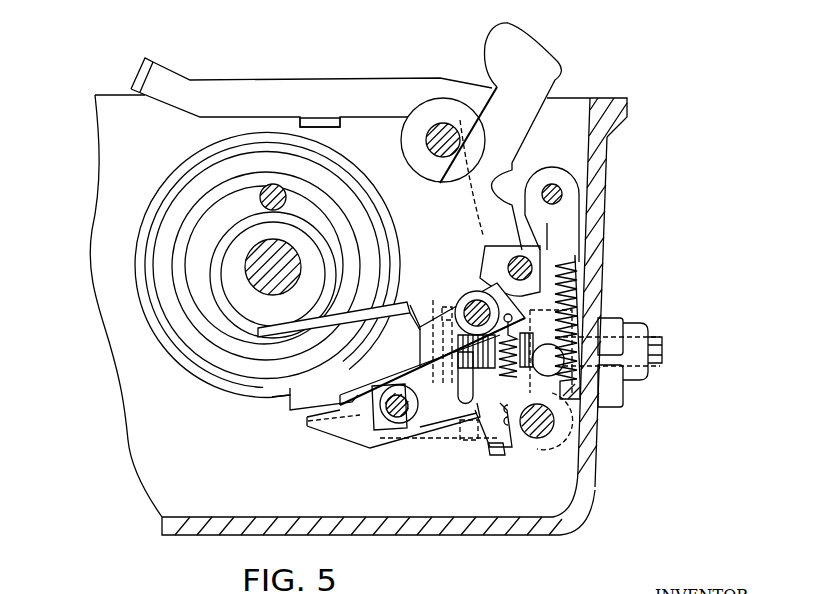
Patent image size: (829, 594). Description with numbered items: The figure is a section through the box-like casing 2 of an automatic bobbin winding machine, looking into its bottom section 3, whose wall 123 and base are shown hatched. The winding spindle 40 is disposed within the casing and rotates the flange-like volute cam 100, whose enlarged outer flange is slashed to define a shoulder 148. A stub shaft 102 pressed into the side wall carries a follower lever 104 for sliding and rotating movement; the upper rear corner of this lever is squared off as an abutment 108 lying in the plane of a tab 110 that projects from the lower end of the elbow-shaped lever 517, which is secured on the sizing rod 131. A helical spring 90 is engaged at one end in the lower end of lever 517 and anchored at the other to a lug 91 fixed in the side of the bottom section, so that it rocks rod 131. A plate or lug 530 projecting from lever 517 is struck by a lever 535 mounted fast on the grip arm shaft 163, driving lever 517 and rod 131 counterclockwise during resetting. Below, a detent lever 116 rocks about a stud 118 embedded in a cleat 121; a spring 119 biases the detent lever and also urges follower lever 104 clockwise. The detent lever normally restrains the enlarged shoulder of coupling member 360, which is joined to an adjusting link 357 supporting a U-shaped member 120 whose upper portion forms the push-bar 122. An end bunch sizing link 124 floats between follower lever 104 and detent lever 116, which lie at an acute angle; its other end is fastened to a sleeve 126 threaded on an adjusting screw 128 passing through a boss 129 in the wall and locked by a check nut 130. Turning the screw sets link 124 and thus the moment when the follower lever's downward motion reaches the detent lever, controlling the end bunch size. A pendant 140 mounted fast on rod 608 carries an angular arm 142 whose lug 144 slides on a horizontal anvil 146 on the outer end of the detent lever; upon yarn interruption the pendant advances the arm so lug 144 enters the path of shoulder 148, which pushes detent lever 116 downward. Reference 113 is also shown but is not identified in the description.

The casing 2 is at (628, 100).
The bottom section 3 is at (513, 532).
The winding spindle 40 is at (253, 273).
The helical spring 90 is at (575, 290).
The lug 91 is at (588, 430).
The volute cam 100 is at (143, 250).
The stub shaft 102 is at (462, 300).
The follower lever 104 is at (358, 320).
The abutment 108 is at (470, 292).
The tab 110 is at (476, 283).
The pawl 113 is at (490, 432).
The detent lever 116 is at (467, 405).
The stud 118 is at (530, 380).
The spring 119 is at (512, 427).
The U-shaped member 120 is at (435, 438).
The cleat 121 is at (562, 440).
The push-bar 122 is at (441, 326).
The wall 123 is at (597, 237).
The end bunch sizing link 124 is at (455, 340).
The sleeve 126 is at (470, 440).
The adjusting screw 128 is at (660, 367).
The boss 129 is at (623, 390).
The check nut 130 is at (637, 380).
The sizing rod 131 is at (510, 262).
The pendant 140 is at (575, 177).
The angular arm 142 is at (356, 397).
The lug 144 is at (345, 405).
The anvil 146 is at (307, 419).
The shoulder 148 is at (248, 127).
The grip arm shaft 163 is at (437, 122).
The adjusting link 357 is at (397, 438).
The coupling member 360 is at (372, 423).
The elbow-shaped lever 517 is at (270, 92).
The lug 530 is at (320, 125).
The lever 535 is at (540, 57).
The rod 608 is at (562, 194).